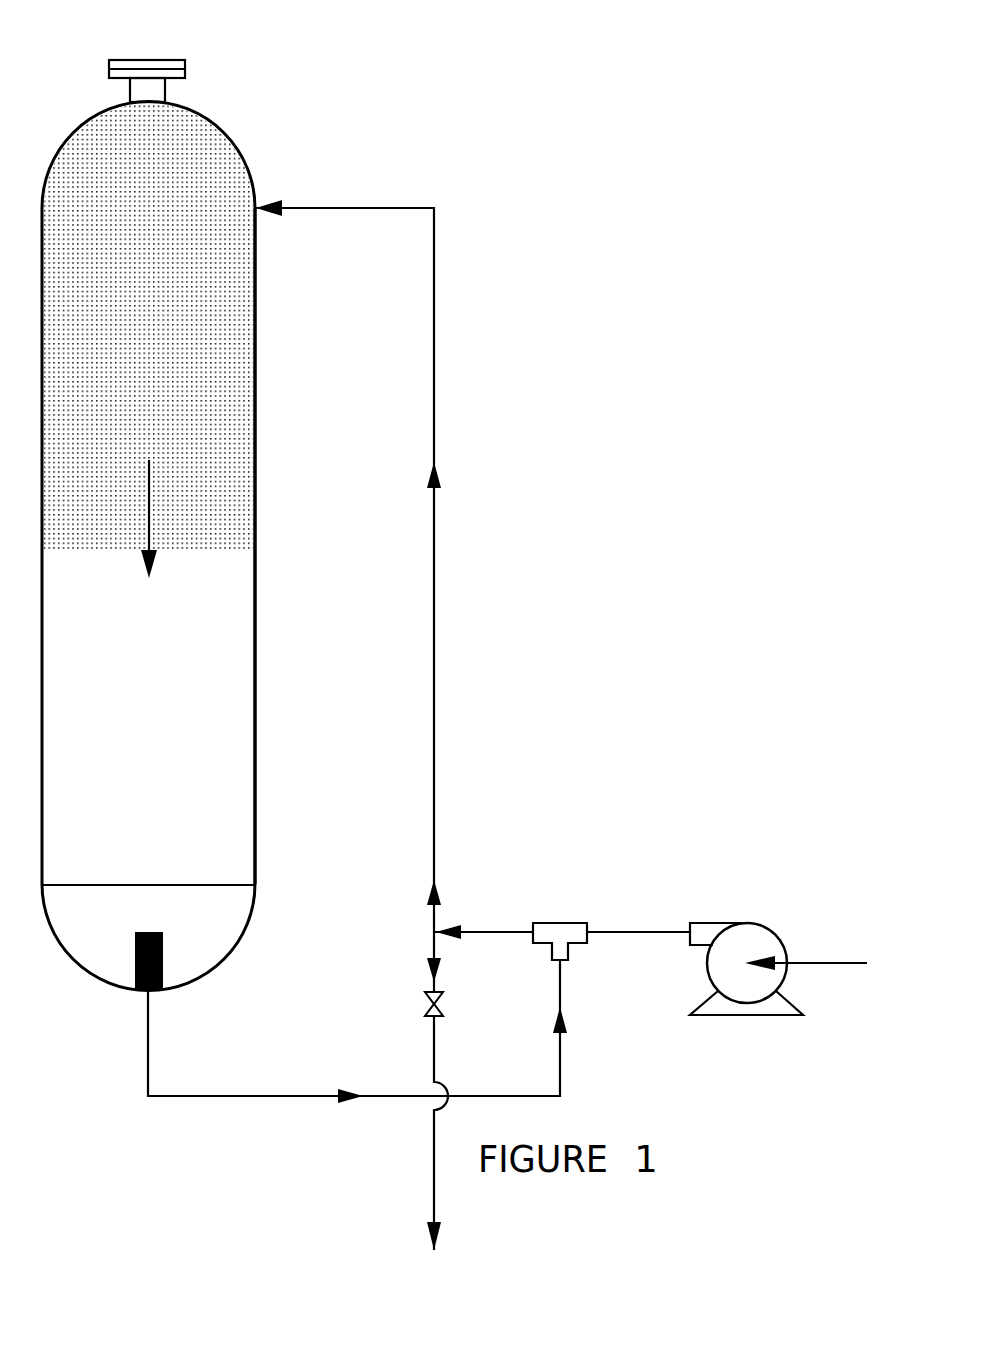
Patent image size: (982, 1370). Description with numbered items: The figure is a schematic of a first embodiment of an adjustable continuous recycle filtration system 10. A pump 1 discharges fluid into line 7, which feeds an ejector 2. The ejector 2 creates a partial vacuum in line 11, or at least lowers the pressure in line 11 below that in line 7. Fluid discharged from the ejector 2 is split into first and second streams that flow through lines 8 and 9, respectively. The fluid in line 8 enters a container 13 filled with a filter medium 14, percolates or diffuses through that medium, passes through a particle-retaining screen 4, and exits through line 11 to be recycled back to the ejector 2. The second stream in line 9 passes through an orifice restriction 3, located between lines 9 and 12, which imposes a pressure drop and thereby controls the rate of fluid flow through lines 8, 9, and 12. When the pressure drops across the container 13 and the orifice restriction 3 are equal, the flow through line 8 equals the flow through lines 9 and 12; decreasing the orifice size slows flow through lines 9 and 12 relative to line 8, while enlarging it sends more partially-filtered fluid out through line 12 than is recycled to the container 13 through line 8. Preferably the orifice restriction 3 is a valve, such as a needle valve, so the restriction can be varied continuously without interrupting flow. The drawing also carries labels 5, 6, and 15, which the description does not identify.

The pump 1 is at (718, 922).
The ejector 2 is at (560, 928).
The orifice restriction 3 is at (430, 1004).
The particle-retaining screen 4 is at (162, 972).
The vessel 5 is at (236, 950).
The vent / fill cap 6 is at (148, 60).
The line 7 is at (620, 932).
The line 8 is at (434, 518).
The line 9 is at (434, 949).
The adjustable continuous recycle filtration system 10 is at (330, 122).
The line 11 is at (393, 1097).
The line 12 is at (434, 1170).
The container 13 is at (255, 273).
The filter medium 14 is at (233, 350).
The feed line to recycle 15 is at (484, 930).